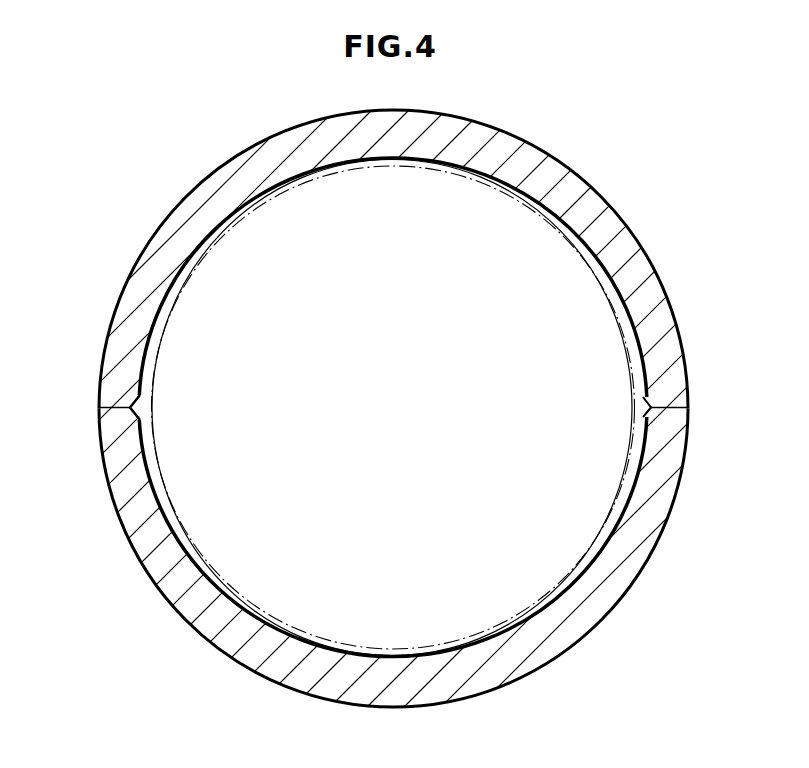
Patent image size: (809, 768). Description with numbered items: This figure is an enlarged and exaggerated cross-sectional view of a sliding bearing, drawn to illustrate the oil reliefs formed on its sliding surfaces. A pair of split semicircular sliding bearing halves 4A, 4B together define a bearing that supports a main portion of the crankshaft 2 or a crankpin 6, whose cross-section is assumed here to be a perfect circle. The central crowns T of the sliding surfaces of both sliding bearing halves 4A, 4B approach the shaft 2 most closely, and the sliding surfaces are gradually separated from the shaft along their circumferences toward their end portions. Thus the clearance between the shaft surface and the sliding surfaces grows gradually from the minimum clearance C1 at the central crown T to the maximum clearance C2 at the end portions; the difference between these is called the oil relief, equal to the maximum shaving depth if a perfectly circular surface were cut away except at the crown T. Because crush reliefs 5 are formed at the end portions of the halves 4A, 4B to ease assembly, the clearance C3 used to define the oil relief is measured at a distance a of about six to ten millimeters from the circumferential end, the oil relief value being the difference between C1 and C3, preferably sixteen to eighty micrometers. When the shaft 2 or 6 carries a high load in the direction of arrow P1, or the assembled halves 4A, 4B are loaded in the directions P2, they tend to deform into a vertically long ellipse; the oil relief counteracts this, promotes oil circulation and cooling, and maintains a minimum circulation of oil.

The sliding bearing half 4A is at (622, 247).
The sliding bearing half 4B is at (464, 688).
The crush relief 5 is at (141, 416).
The crankshaft 2 is at (614, 513).
The crankpin 6 is at (392, 408).
The central crown T is at (386, 164).
The minimum clearance C1 is at (385, 160).
The maximum clearance C2 is at (648, 406).
The clearance at measuring point C3 is at (645, 352).
The distance from circumferential end a is at (650, 408).
The load direction on shaft P1 is at (393, 408).
The load direction on bearing halves P2 is at (96, 408).